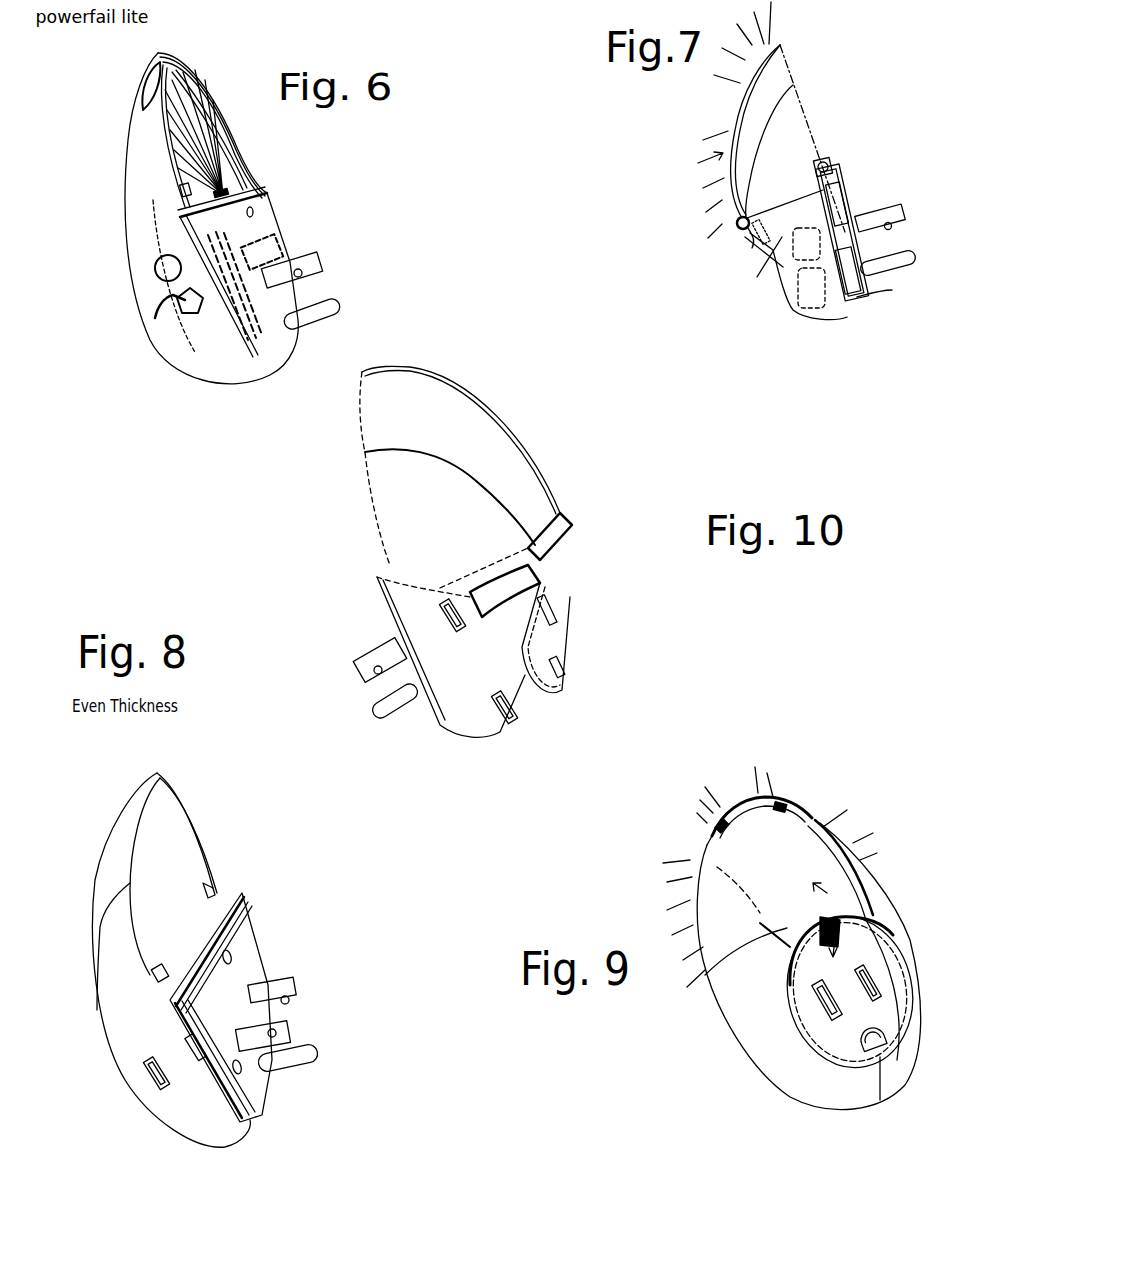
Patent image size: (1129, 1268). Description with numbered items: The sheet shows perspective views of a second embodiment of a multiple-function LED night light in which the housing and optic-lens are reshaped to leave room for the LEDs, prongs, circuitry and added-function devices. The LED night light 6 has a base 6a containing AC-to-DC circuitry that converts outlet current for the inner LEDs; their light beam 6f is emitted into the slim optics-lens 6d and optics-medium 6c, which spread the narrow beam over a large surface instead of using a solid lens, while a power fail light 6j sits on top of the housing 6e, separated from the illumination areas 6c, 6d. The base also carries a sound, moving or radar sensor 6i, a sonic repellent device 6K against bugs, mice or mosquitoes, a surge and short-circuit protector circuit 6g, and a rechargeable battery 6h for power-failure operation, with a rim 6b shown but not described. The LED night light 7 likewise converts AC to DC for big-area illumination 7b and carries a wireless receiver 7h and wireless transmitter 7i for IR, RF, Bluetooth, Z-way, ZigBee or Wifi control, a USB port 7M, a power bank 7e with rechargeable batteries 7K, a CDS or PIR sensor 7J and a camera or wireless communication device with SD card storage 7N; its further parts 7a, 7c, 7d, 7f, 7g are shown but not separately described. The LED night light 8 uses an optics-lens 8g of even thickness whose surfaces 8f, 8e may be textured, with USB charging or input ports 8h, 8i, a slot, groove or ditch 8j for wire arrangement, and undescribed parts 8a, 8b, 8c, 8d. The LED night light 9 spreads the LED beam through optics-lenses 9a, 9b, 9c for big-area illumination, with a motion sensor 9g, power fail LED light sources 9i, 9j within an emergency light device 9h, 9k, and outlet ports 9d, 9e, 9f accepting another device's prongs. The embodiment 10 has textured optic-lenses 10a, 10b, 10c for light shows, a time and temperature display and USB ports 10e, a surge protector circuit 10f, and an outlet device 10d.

In FIG. 6, the LED night light 6 is at (218, 97).
In FIG. 6, the base 6a is at (270, 225).
In FIG. 6, the dome base edge 6b is at (263, 192).
In FIG. 6, the optics-medium 6c is at (145, 208).
In FIG. 6, the optics-lens 6d is at (128, 132).
In FIG. 6, the housing 6e is at (171, 52).
In FIG. 6, the light beam 6f is at (204, 125).
In FIG. 6, the protector circuit 6g is at (233, 297).
In FIG. 6, the rechargeable battery 6h is at (266, 240).
In FIG. 6, the sensor 6i is at (153, 273).
In FIG. 6, the power fail light device 6j is at (152, 66).
In FIG. 6, the sonic repellent device 6K is at (153, 330).
In FIG. 7, the LED night light 7 is at (798, 107).
In FIG. 7, the body face 7a is at (790, 255).
In FIG. 7, the big-area illumination 7b is at (731, 104).
In FIG. 7, the dome outer layer 7c is at (768, 87).
In FIG. 7, the dome inner layer 7d is at (777, 160).
In FIG. 7, the power bank 7e is at (832, 198).
In FIG. 7, the flat prong 7f is at (893, 205).
In FIG. 7, the round prong 7g is at (915, 252).
In FIG. 7, the wireless receiver 7h is at (795, 255).
In FIG. 7, the wireless transmitter 7i is at (800, 292).
In FIG. 7, the sensor 7J is at (827, 163).
In FIG. 7, the power bank 7K is at (833, 190).
In FIG. 7, the USB port 7M is at (757, 240).
In FIG. 7, the camera and wireless communication device 7N is at (737, 223).
In FIG. 8, the LED night light 8 is at (188, 797).
In FIG. 8, the body face 8a is at (245, 950).
In FIG. 8, the flat prong 8b is at (298, 983).
In FIG. 8, the flat prong 8c is at (292, 1023).
In FIG. 8, the round prong 8d is at (293, 1067).
In FIG. 8, the optics-lens surface 8e is at (123, 977).
In FIG. 8, the optics-lens surface 8f is at (113, 857).
In FIG. 8, the optics-lens 8g is at (152, 773).
In FIG. 8, the USB port 8h is at (152, 1077).
In FIG. 8, the USB port 8i is at (200, 1067).
In FIG. 8, the wire-arrangement groove 8j is at (223, 893).
In FIG. 9, the LED night light 9 is at (793, 933).
In FIG. 9, the optics-lens 9a is at (803, 813).
In FIG. 9, the optics-lens 9b is at (728, 890).
In FIG. 9, the optics-lens 9c is at (867, 887).
In FIG. 9, the outlet port 9d is at (878, 987).
In FIG. 9, the outlet port 9e is at (830, 1017).
In FIG. 9, the outlet port 9f is at (887, 1043).
In FIG. 9, the motion sensor 9g is at (787, 937).
In FIG. 9, the emergency light device 9h is at (777, 807).
In FIG. 9, the power fail LED light source 9i is at (697, 852).
In FIG. 9, the power fail LED light source 9j is at (812, 822).
In FIG. 9, the emergency light device 9k is at (754, 804).
In FIG. 10, the LED night light 10 is at (412, 368).
In FIG. 10, the optic-lens 10a is at (488, 675).
In FIG. 10, the optic-lens 10b is at (473, 427).
In FIG. 10, the optic-lens 10c is at (433, 500).
In FIG. 10, the outlet device 10d is at (563, 670).
In FIG. 10, the time/temperature display 10e is at (563, 532).
In FIG. 10, the surge protector circuit 10f is at (508, 598).